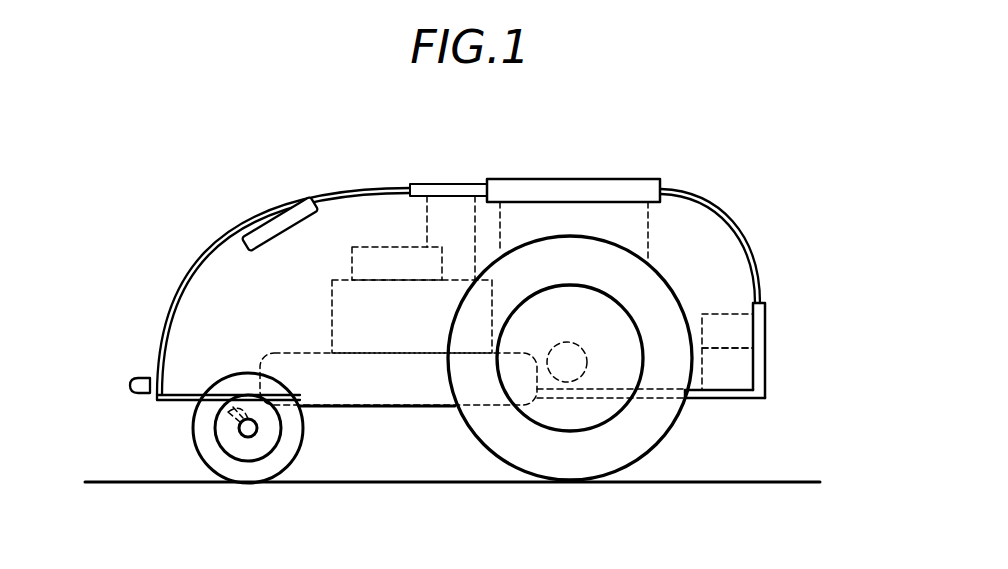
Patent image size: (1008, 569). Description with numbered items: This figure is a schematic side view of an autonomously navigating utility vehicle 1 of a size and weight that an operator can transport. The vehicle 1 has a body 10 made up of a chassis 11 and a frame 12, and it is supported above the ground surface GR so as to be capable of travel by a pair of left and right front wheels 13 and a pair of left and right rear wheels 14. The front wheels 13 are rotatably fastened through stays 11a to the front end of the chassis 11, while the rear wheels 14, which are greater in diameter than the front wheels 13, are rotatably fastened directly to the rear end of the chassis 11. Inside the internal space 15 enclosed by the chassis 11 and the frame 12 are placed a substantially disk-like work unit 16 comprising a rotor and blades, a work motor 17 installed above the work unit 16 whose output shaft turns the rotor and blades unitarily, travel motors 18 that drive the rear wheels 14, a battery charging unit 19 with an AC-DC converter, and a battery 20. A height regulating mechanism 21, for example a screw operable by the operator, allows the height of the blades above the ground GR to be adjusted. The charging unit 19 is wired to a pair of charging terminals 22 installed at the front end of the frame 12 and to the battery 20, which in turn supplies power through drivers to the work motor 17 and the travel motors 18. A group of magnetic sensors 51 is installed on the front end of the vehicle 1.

The autonomously navigating utility vehicle 1 is at (713, 192).
The body 10 is at (700, 346).
The chassis 11 is at (677, 382).
The stays 11a is at (228, 412).
The frame 12 is at (759, 293).
The front wheels 13 is at (200, 455).
The rear wheels 14 is at (472, 435).
The internal space 15 is at (727, 247).
The work unit 16 is at (353, 390).
The work motor 17 is at (375, 325).
The travel motors 18 is at (565, 343).
The battery charging unit 19 is at (715, 343).
The battery 20 is at (715, 379).
The height regulating mechanism 21 is at (385, 275).
The charging terminals 22 is at (142, 378).
The magnetic sensors 51 is at (283, 207).
The ground surface GR is at (703, 481).